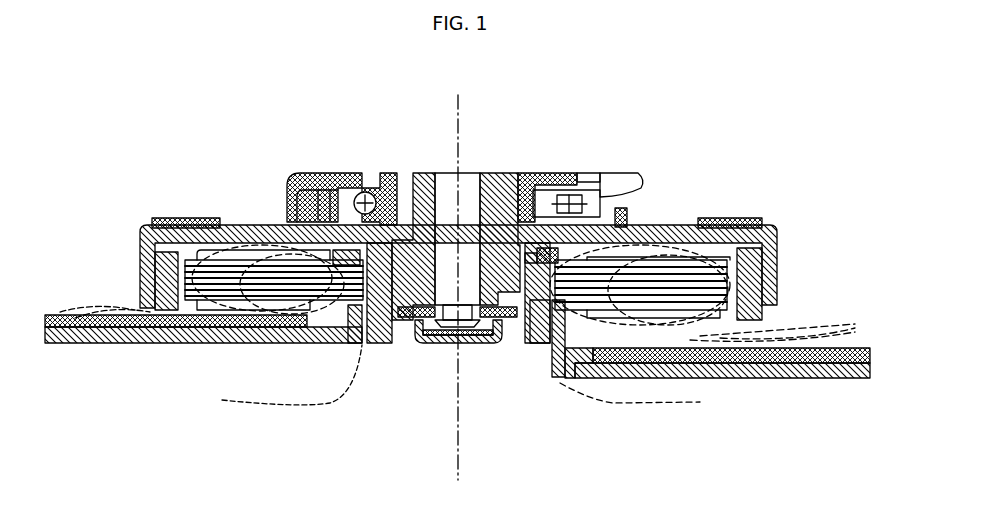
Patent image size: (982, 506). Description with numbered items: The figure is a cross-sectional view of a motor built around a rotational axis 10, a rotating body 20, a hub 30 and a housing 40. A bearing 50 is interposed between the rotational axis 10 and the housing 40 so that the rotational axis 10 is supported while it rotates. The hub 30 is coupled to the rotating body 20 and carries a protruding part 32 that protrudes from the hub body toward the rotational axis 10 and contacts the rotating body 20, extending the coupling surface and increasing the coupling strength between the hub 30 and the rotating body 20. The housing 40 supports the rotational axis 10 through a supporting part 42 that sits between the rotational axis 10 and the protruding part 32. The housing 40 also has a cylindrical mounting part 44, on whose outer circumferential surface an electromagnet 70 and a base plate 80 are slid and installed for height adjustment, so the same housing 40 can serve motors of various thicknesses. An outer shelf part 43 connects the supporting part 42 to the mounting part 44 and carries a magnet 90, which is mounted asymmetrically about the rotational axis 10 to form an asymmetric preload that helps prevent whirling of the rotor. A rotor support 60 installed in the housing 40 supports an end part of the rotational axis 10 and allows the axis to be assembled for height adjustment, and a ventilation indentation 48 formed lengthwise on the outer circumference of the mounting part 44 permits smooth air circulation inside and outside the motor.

The rotational axis 10 is at (470, 172).
The rotating body 20 is at (672, 222).
The hub 30 is at (512, 172).
The protruding part 32 is at (556, 172).
The housing 40 is at (543, 333).
The supporting part 42 is at (413, 343).
The outer shelf part 43 is at (580, 347).
The cylindrical mounting part 44 is at (563, 340).
The ventilation indentation 48 is at (550, 353).
The bearing 50 is at (505, 343).
The rotor support 60 is at (440, 343).
The electromagnet 70 is at (716, 220).
The base plate 80 is at (872, 368).
The magnet 90 is at (550, 258).